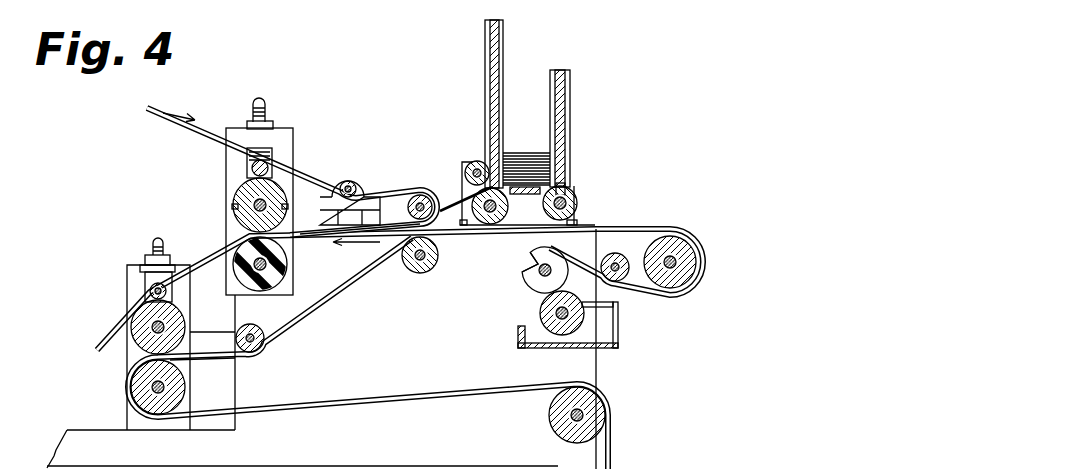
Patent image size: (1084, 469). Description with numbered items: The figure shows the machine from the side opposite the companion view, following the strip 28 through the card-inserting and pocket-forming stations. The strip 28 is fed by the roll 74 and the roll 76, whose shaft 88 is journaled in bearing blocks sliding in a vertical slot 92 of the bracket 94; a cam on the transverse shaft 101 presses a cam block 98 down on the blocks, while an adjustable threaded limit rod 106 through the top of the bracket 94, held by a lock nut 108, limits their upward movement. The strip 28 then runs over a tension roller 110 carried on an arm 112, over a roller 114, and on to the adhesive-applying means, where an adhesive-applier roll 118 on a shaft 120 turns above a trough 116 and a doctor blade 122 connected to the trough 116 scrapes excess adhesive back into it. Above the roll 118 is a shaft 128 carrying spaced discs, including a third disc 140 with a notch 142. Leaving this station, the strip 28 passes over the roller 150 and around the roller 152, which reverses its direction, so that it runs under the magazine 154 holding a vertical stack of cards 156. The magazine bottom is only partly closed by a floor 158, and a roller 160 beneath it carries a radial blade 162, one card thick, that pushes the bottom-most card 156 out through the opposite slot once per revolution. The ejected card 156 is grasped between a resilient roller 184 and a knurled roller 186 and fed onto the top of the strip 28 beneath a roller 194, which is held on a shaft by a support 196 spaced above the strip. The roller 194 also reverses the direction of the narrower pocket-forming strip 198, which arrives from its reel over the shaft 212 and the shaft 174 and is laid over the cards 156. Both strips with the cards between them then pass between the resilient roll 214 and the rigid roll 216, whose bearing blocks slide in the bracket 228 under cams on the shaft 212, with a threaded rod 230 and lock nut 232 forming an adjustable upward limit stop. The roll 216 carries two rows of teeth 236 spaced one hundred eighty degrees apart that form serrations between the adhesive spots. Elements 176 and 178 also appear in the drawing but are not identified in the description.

The strip 28 is at (330, 299).
The roll 74 is at (143, 393).
The roll 76 is at (150, 347).
The shaft 88 is at (150, 330).
The vertical slot 92 is at (145, 267).
The bracket 94 is at (132, 275).
The cam block 98 is at (168, 302).
The transverse shaft 101 is at (147, 293).
The adjustable threaded limit rod 106 is at (154, 240).
The lock nut 108 is at (192, 245).
The tension roller 110 is at (253, 351).
The arm 112 is at (207, 340).
The roller 114 is at (405, 258).
The trough 116 is at (605, 348).
The adhesive-applier roll 118 is at (547, 331).
The shaft 120 is at (563, 335).
The doctor blade 122 is at (606, 306).
The shaft 128 is at (540, 274).
The third disc 140 is at (550, 294).
The notch 142 is at (524, 264).
The roller 150 is at (620, 257).
The roller 152 is at (690, 260).
The magazine 154 is at (568, 107).
The cards 156 is at (532, 160).
The floor 158 is at (571, 186).
The roller 160 is at (574, 204).
The radial blade 162 is at (572, 178).
The shaft 174 is at (346, 181).
The roller housing 176 is at (355, 183).
The guide block 178 is at (367, 210).
The resilient roller 184 is at (487, 219).
The knurled roller 186 is at (476, 160).
The roller 194 is at (418, 189).
The support 196 is at (447, 225).
The pocket-forming strip 198 is at (303, 172).
The shaft 212 is at (252, 168).
The roll 214 is at (255, 283).
The roll 216 is at (242, 192).
The bracket 228 is at (238, 137).
The threaded rod 230 is at (260, 100).
The lock nut 232 is at (251, 120).
The rows of teeth 236 is at (232, 207).